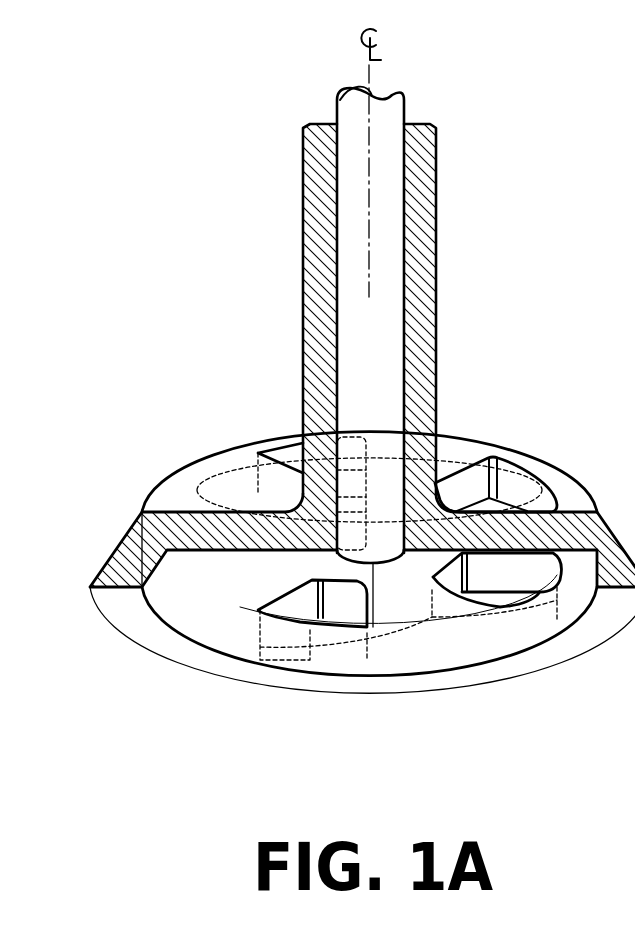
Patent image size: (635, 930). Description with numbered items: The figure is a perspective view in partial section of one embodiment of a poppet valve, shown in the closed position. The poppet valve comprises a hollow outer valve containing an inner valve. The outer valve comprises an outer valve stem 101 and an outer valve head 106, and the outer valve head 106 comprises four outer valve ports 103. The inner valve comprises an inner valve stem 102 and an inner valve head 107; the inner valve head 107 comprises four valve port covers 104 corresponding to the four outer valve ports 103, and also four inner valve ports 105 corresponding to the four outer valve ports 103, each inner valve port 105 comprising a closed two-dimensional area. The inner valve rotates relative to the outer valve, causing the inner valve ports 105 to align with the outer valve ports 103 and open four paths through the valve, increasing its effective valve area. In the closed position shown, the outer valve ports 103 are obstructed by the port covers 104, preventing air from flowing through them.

The outer valve stem 101 is at (313, 243).
The inner valve stem 102 is at (352, 355).
The outer valve ports 103 is at (508, 477).
The valve port covers 104 is at (412, 607).
The inner valve ports 105 is at (300, 605).
The outer valve head 106 is at (215, 467).
The inner valve head 107 is at (210, 625).